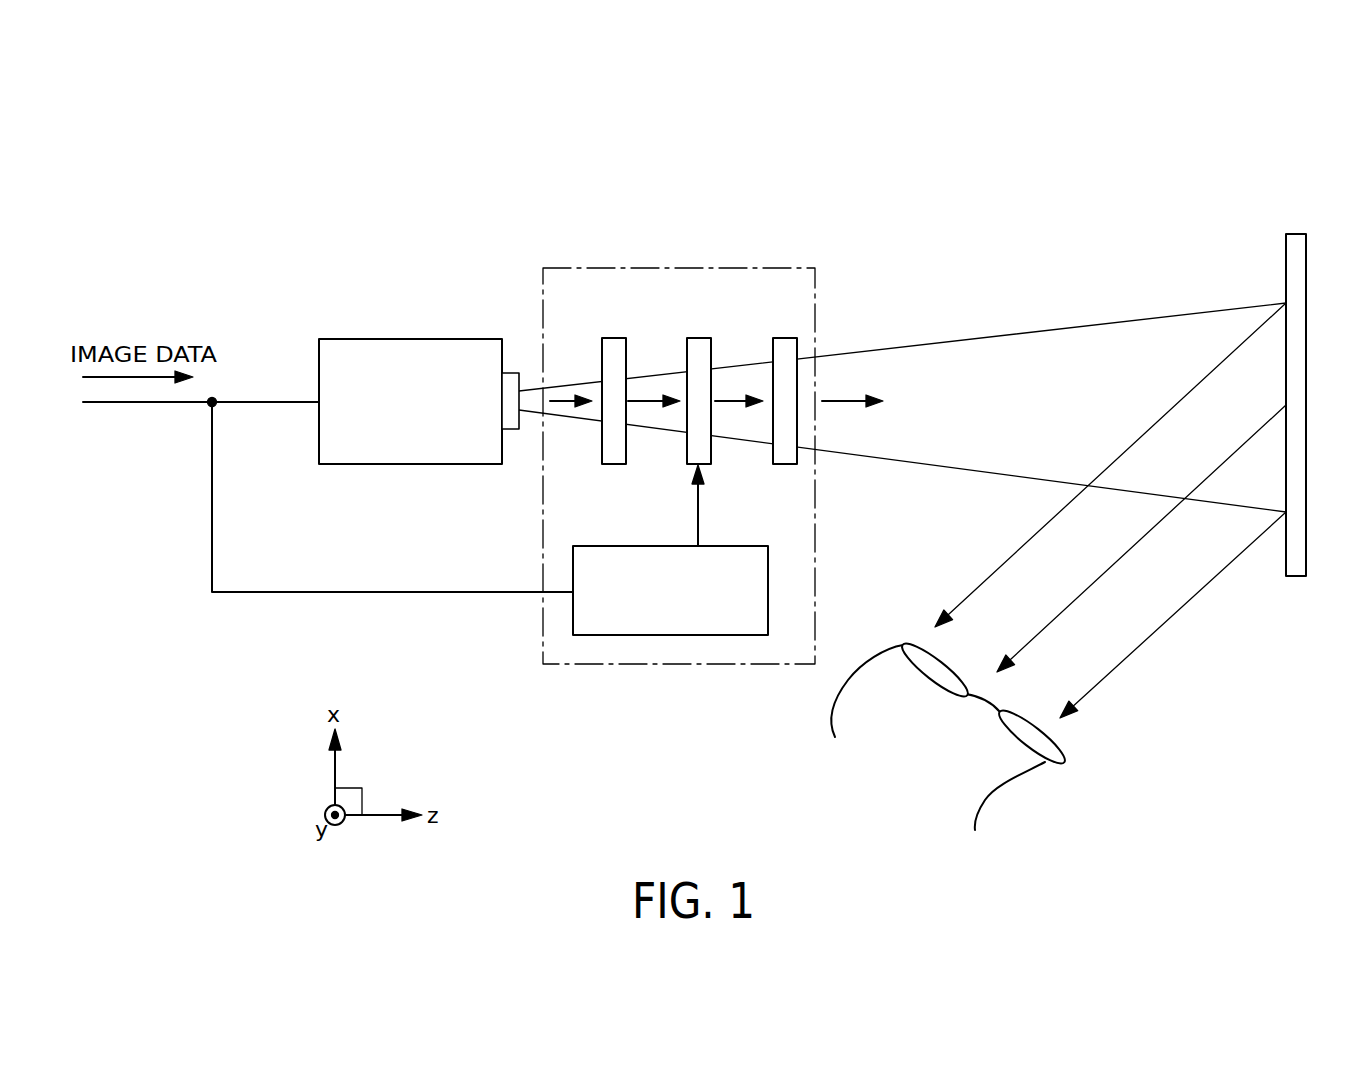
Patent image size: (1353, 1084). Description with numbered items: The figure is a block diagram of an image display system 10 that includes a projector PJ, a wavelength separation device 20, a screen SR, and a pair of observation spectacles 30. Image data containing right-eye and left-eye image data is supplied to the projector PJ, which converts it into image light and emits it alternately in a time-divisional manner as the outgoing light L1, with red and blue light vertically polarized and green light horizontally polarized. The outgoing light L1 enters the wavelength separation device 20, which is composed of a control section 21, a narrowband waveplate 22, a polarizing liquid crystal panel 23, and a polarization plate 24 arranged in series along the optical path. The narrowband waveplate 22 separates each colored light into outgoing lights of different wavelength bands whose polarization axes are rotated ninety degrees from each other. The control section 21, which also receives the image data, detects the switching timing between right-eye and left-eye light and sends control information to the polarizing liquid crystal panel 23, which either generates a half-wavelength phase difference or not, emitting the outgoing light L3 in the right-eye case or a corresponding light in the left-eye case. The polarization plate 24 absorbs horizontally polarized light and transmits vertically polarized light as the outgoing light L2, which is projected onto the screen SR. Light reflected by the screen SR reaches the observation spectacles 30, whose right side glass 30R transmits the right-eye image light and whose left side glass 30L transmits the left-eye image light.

The image display system 10 is at (1246, 135).
The wavelength separation device 20 is at (791, 266).
The control section 21 is at (617, 546).
The narrowband waveplate 22 is at (613, 338).
The polarizing liquid crystal panel 23 is at (697, 338).
The polarization plate 24 is at (785, 338).
The pair of observation spectacles 30 is at (950, 743).
The left side glass 30L is at (925, 678).
The right side glass 30R is at (1008, 737).
The projector PJ is at (418, 339).
The screen SR is at (1296, 234).
The outgoing light L1 is at (567, 394).
The outgoing light L2 is at (1054, 510).
The outgoing light L3 is at (654, 394).